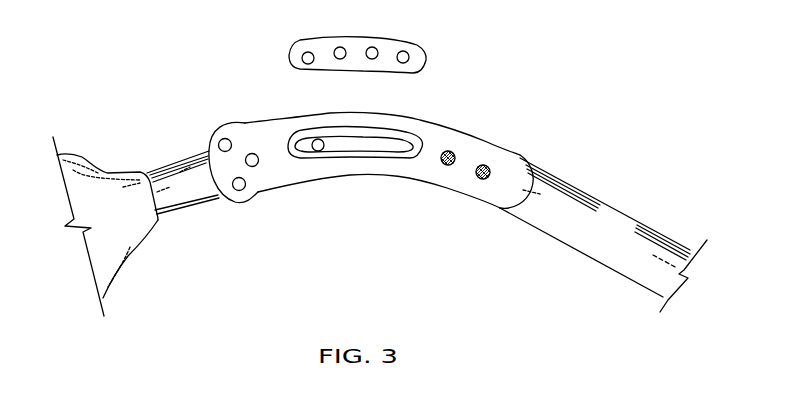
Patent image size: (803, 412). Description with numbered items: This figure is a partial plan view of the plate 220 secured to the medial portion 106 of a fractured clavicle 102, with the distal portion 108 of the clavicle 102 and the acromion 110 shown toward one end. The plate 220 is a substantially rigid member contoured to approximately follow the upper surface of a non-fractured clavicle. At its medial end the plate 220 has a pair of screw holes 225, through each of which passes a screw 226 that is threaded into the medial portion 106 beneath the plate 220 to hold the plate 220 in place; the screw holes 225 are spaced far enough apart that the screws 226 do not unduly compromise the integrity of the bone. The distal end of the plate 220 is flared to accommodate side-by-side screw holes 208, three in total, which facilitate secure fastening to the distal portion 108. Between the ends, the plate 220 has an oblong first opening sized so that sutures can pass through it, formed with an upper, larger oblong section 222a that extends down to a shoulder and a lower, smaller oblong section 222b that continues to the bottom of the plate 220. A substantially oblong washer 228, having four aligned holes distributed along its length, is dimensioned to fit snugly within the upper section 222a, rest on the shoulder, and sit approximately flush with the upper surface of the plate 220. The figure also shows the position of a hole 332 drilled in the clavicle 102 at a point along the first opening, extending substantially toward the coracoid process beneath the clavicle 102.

The clavicle 102 is at (163, 172).
The medial portion 106 is at (603, 214).
The distal portion 108 is at (178, 197).
The acromion 110 is at (100, 252).
The screw holes 208 is at (257, 230).
The plate 220 is at (513, 157).
The upper, larger oblong section 222a is at (407, 163).
The lower, smaller oblong section 222b is at (360, 143).
The screw holes 225 is at (451, 151).
The screws 226 is at (434, 158).
The washer 228 is at (418, 58).
The hole 332 is at (315, 143).